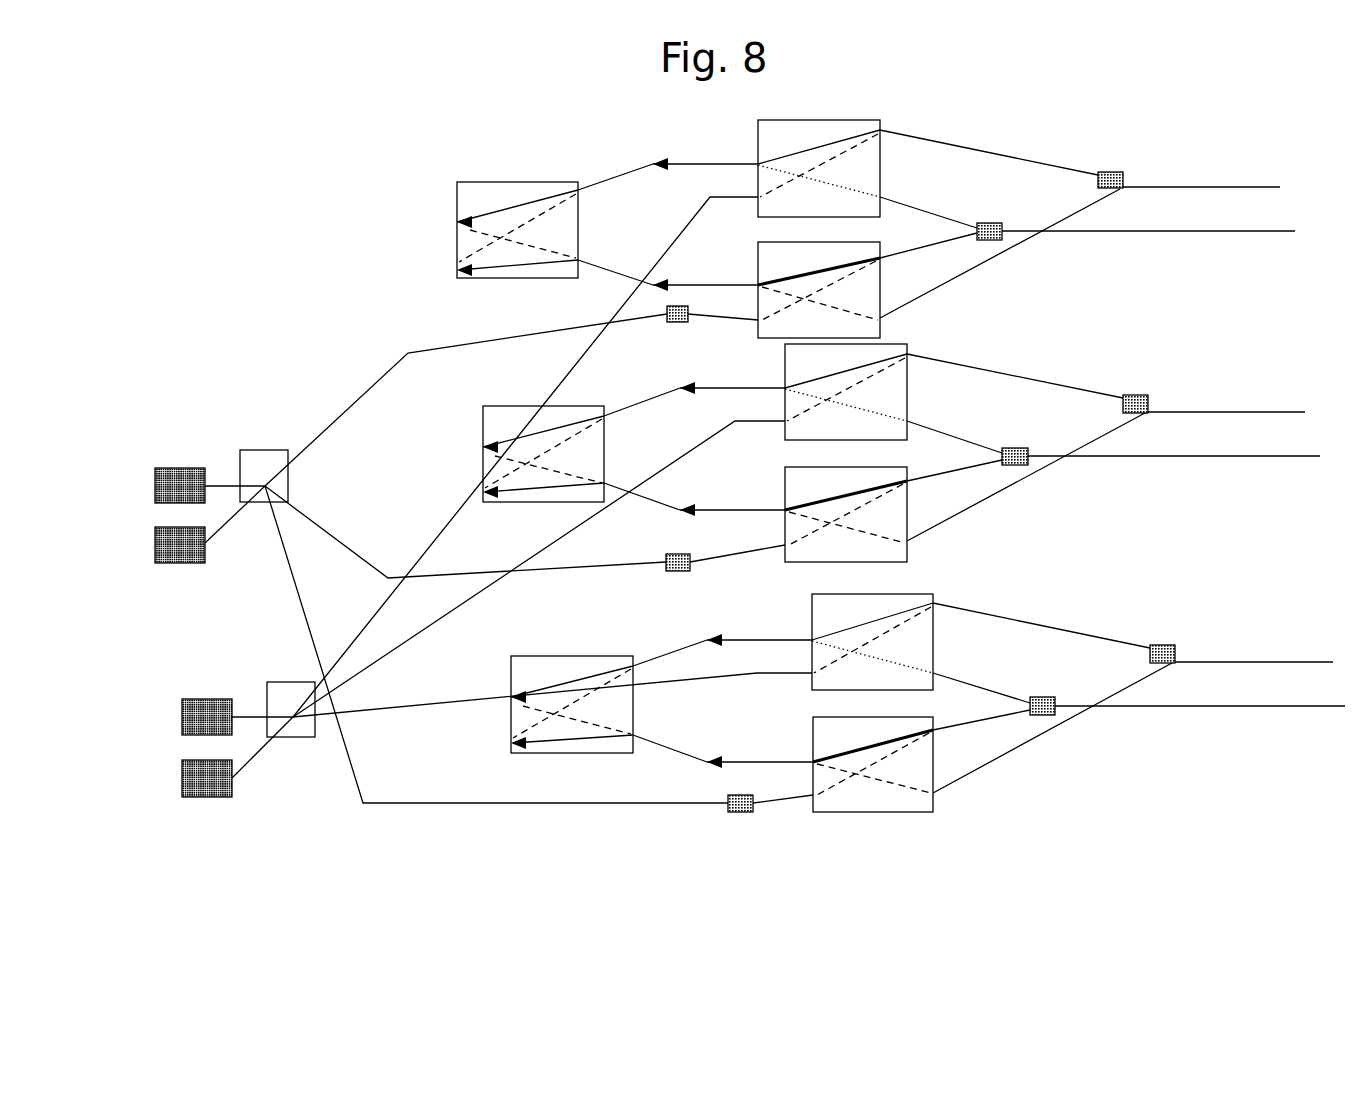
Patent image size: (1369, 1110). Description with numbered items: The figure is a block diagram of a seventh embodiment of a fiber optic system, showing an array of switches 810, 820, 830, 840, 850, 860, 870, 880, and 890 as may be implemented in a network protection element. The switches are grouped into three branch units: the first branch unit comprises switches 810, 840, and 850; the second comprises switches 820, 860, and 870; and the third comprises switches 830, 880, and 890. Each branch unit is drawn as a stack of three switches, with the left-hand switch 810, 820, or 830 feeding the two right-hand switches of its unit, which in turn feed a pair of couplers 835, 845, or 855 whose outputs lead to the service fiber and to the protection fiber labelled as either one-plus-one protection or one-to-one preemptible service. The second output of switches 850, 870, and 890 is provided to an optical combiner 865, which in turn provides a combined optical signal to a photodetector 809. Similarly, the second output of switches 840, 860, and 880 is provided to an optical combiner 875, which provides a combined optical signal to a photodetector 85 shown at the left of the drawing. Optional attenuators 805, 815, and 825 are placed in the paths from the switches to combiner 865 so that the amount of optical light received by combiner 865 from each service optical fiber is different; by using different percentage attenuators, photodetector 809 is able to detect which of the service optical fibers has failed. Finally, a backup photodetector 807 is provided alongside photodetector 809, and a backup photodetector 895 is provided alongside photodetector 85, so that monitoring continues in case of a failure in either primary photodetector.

The switch 810 is at (541, 182).
The switch 820 is at (510, 406).
The switch 830 is at (594, 656).
The switch 840 is at (842, 120).
The switch 850 is at (852, 242).
The switch 860 is at (785, 375).
The switch 870 is at (785, 497).
The switch 880 is at (812, 626).
The switch 890 is at (813, 742).
The attenuator 805 is at (672, 326).
The attenuator 815 is at (682, 554).
The attenuator 825 is at (740, 815).
The couplers 835 is at (1113, 205).
The couplers 845 is at (1138, 431).
The couplers 855 is at (1165, 681).
The optical combiner 865 is at (245, 450).
The optical combiner 875 is at (301, 682).
The photodetector 809 is at (190, 468).
The backup photodetector 807 is at (182, 563).
The photodetector 85 is at (182, 717).
The backup photodetector 895 is at (210, 797).